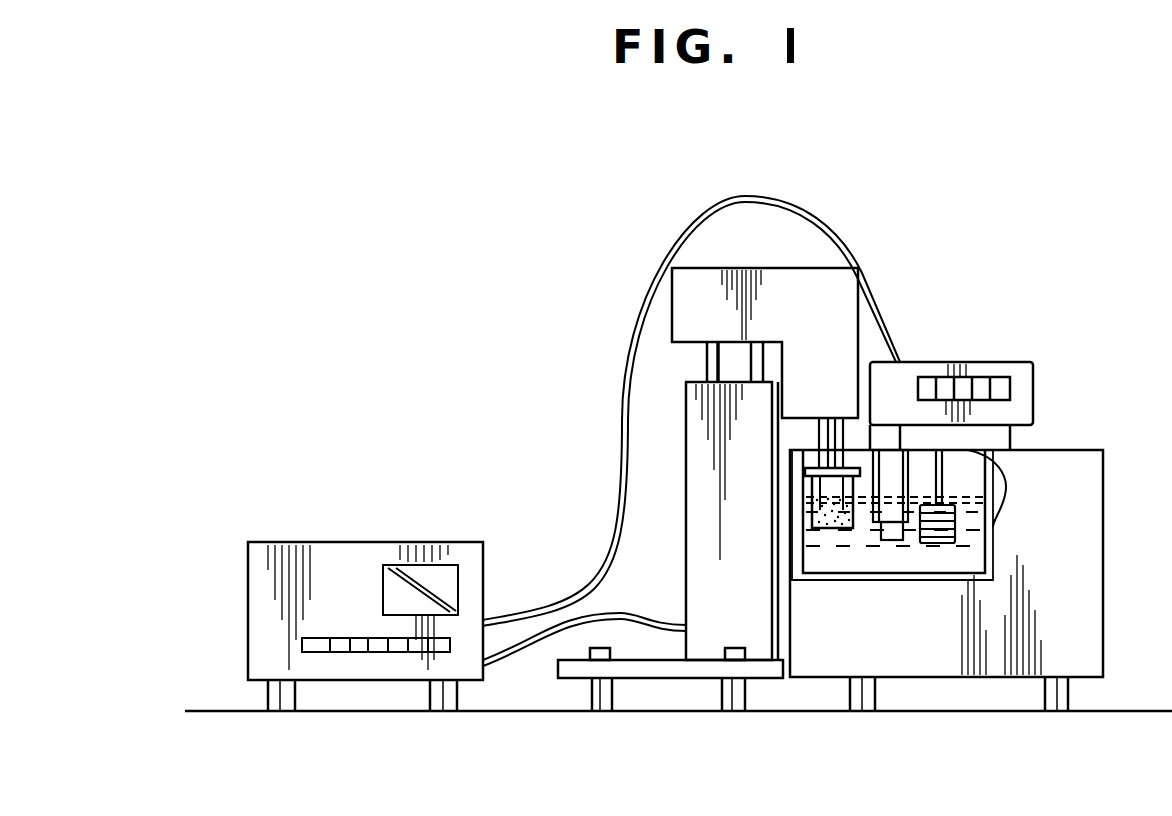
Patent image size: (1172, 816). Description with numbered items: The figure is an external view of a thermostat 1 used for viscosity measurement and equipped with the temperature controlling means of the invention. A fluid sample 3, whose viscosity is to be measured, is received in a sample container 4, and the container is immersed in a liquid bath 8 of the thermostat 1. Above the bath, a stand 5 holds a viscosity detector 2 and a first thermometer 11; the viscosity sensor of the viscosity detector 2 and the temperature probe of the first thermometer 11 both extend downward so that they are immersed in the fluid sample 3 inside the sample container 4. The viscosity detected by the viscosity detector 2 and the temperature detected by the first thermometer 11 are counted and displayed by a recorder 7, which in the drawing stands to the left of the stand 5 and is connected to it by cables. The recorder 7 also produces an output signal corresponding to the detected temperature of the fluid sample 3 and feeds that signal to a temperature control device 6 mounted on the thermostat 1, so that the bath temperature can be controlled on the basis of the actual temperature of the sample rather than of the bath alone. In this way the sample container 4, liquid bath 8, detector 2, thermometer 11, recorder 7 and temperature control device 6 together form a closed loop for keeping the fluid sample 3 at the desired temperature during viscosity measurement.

The thermostat 1 is at (1126, 610).
The viscosity detector 2 is at (845, 437).
The fluid sample 3 is at (843, 527).
The sample container 4 is at (830, 530).
The stand 5 is at (708, 470).
The temperature control device 6 is at (1036, 378).
The recorder 7 is at (312, 556).
The liquid bath 8 is at (972, 537).
The first thermometer 11 is at (815, 437).